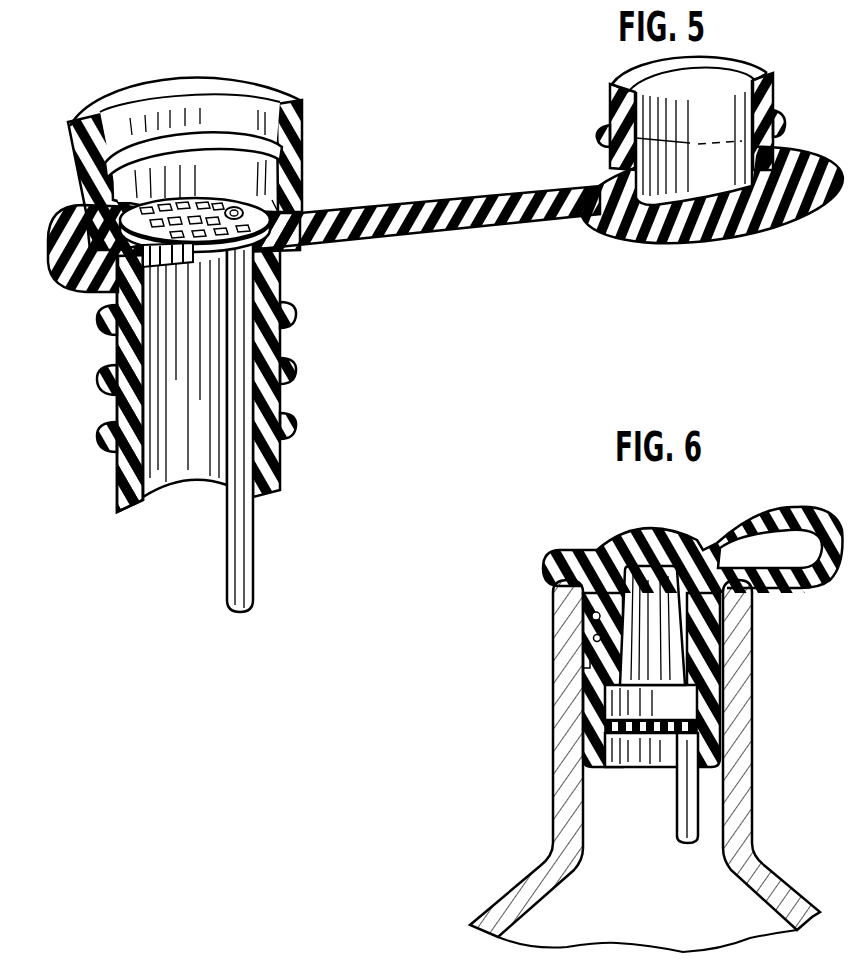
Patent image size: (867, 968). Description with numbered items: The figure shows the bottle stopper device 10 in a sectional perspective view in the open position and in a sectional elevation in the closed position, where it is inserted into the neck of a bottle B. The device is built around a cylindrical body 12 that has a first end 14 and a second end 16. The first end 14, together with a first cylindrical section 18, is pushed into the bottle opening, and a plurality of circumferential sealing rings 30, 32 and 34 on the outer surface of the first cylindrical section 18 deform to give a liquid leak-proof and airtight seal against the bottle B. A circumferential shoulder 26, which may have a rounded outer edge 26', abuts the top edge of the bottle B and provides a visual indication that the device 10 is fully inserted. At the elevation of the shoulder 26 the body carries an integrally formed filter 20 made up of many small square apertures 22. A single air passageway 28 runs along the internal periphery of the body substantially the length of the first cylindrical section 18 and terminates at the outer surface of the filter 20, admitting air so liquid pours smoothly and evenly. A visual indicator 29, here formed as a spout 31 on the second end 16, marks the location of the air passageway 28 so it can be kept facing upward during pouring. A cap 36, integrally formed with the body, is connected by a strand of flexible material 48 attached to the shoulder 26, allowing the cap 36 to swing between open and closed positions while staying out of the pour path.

In FIG. 6, the bottle stopper device 10 is at (758, 634).
In FIG. 5, the cylindrical body 12 is at (203, 376).
In FIG. 6, the cylindrical body 12 is at (654, 693).
In FIG. 6, the first end 14 is at (664, 572).
In FIG. 6, the second end 16 is at (623, 738).
In FIG. 5, the first cylindrical section 18 is at (117, 350).
In FIG. 5, the filter 20 is at (83, 283).
In FIG. 5, the apertures 22 is at (147, 203).
In FIG. 6, the circumferential shoulder 26 is at (536, 596).
In FIG. 6, the rounded outer edge 26' is at (539, 625).
In FIG. 5, the air passageway 28 is at (232, 572).
In FIG. 6, the air passageway 28 is at (690, 847).
In FIG. 5, the visual indicator 29 is at (167, 275).
In FIG. 6, the circumferential sealing ring 30 is at (583, 660).
In FIG. 5, the spout 31 is at (100, 130).
In FIG. 6, the circumferential sealing ring 32 is at (583, 688).
In FIG. 6, the circumferential sealing ring 34 is at (617, 735).
In FIG. 6, the cap 36 is at (690, 668).
In FIG. 6, the strand of flexible material 48 is at (836, 522).
In FIG. 6, the bottle B is at (522, 875).